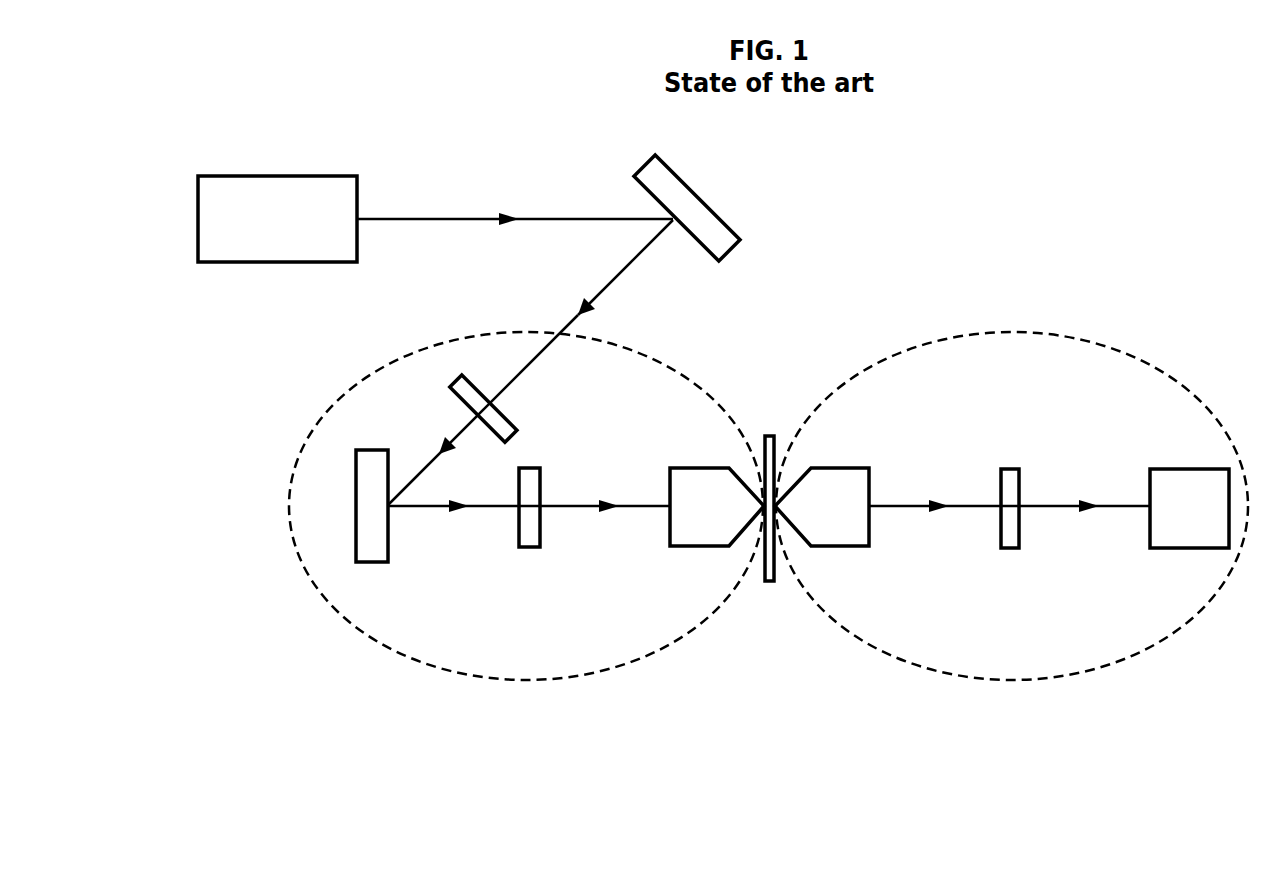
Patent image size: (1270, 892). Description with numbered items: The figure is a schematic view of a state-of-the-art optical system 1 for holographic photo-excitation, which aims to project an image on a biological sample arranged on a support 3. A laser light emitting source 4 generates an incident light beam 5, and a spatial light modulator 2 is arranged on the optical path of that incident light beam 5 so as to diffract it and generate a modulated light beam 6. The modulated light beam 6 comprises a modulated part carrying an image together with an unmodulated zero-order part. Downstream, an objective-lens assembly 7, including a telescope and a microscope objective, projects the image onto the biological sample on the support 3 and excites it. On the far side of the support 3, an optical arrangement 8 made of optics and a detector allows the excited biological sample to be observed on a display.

The optical system 1 is at (880, 211).
The spatial light modulator 2 is at (688, 203).
The support 3 is at (771, 583).
The laser light emitting source 4 is at (277, 197).
The incident light beam 5 is at (430, 217).
The modulated light beam 6 is at (630, 266).
The objective-lens assembly 7 is at (527, 682).
The optical arrangement 8 is at (1008, 682).